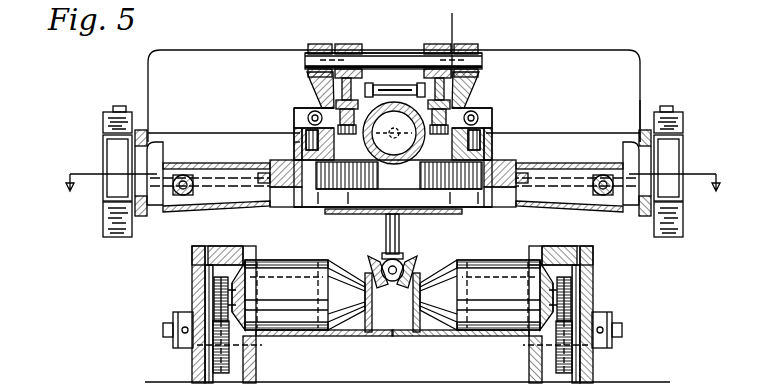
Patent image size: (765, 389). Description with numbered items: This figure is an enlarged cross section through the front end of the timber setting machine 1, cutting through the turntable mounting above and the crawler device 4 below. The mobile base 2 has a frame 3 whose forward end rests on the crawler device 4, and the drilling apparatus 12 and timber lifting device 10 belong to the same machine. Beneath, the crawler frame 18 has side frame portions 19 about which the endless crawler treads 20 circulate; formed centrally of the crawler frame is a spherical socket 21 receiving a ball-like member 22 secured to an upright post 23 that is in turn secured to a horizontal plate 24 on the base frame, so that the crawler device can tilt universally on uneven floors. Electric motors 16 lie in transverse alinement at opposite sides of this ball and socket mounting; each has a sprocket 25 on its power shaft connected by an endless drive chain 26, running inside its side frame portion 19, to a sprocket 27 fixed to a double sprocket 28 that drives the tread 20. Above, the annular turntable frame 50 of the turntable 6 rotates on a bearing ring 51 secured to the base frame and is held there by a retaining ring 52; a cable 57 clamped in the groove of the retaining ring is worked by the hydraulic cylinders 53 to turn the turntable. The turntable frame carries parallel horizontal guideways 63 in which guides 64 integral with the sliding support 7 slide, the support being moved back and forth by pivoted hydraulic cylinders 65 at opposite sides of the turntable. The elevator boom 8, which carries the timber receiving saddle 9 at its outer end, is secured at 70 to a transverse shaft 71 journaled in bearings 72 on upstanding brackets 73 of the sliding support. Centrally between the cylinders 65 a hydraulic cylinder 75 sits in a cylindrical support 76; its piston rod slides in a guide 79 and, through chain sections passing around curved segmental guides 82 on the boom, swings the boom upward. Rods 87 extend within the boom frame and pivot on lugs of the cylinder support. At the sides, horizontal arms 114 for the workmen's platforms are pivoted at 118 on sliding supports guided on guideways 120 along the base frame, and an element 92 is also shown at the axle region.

The timber setting machine 1 is at (646, 79).
The mobile base 2 is at (641, 130).
The frame 3 is at (623, 155).
The crawler device 4 is at (192, 263).
The turntable 6 is at (300, 141).
The sliding support 7 is at (462, 72).
The elevator boom 8 is at (356, 44).
The timber receiving saddle 9 is at (312, 110).
The timber lifting device 10 is at (453, 21).
The drilling apparatus 12 is at (388, 192).
The electric motors 16 is at (311, 318).
The crawler frame 18 is at (372, 336).
The side frame portions 19 is at (192, 362).
The endless crawler treads 20 is at (211, 258).
The spherical socket 21 is at (406, 260).
The ball-like member 22 is at (393, 283).
The upright post 23 is at (385, 230).
The horizontal plate 24 is at (436, 213).
The sprocket 25 is at (216, 290).
The endless drive chain 26 is at (192, 349).
The sprocket 27 is at (222, 372).
The double sprocket 28 is at (213, 296).
The turntable frame 50 is at (496, 160).
The bearing ring 51 is at (296, 190).
The retaining ring 52 is at (504, 190).
The hydraulic cylinders 53 is at (187, 195).
The cable 57 is at (221, 166).
The horizontal guideways 63 is at (295, 110).
The guides 64 is at (490, 130).
The hydraulic cylinders 65 is at (336, 110).
The boom securing point 70 is at (347, 45).
The shaft 71 is at (364, 55).
The bearings 72 is at (314, 44).
The upstanding brackets 73 is at (311, 46).
The hydraulic cylinder 75 is at (354, 175).
The cylindrical support 76 is at (441, 175).
The guide 79 is at (399, 198).
The curved segmental guides 82 is at (394, 133).
The rods 87 is at (416, 78).
The axle tube 92 is at (571, 162).
The horizontal arms 114 is at (104, 157).
The pivotal mounting 118 is at (114, 107).
The guideways 120 is at (112, 139).